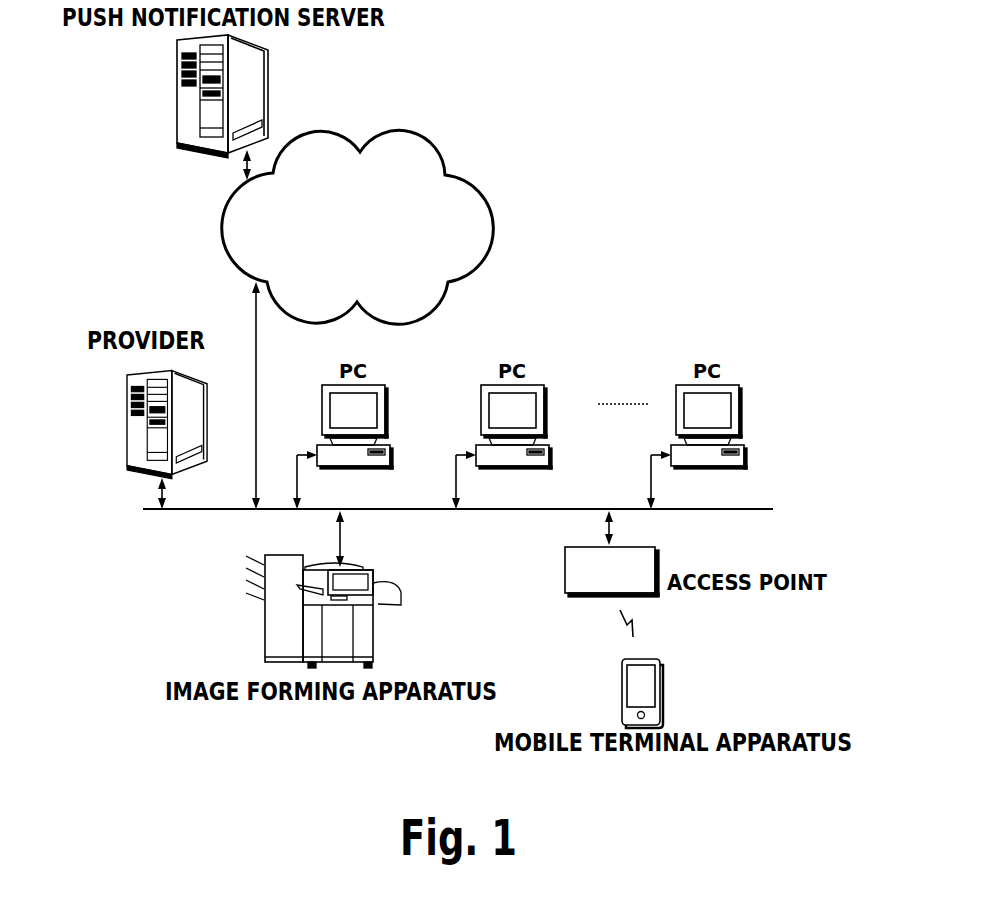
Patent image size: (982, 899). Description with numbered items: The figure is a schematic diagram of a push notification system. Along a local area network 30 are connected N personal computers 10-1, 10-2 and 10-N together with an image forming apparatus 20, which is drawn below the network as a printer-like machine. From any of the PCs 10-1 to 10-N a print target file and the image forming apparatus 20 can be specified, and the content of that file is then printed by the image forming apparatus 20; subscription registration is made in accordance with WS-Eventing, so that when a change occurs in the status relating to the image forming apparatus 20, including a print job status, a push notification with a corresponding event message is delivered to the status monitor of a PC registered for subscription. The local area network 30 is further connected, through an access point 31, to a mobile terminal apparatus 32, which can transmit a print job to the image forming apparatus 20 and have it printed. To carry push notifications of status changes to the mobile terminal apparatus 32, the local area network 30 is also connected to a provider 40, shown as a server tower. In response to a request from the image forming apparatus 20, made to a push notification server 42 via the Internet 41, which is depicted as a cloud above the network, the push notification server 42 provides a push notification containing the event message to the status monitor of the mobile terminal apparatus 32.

The push notification server 42 is at (270, 96).
The Internet 41 is at (405, 134).
The provider 40 is at (206, 387).
The personal computer 10-1 is at (389, 447).
The personal computer 10-2 is at (548, 447).
The personal computer 10-N is at (743, 447).
The local area network 30 is at (486, 511).
The image forming apparatus 20 is at (375, 572).
The access point 31 is at (657, 565).
The mobile terminal apparatus 32 is at (659, 660).